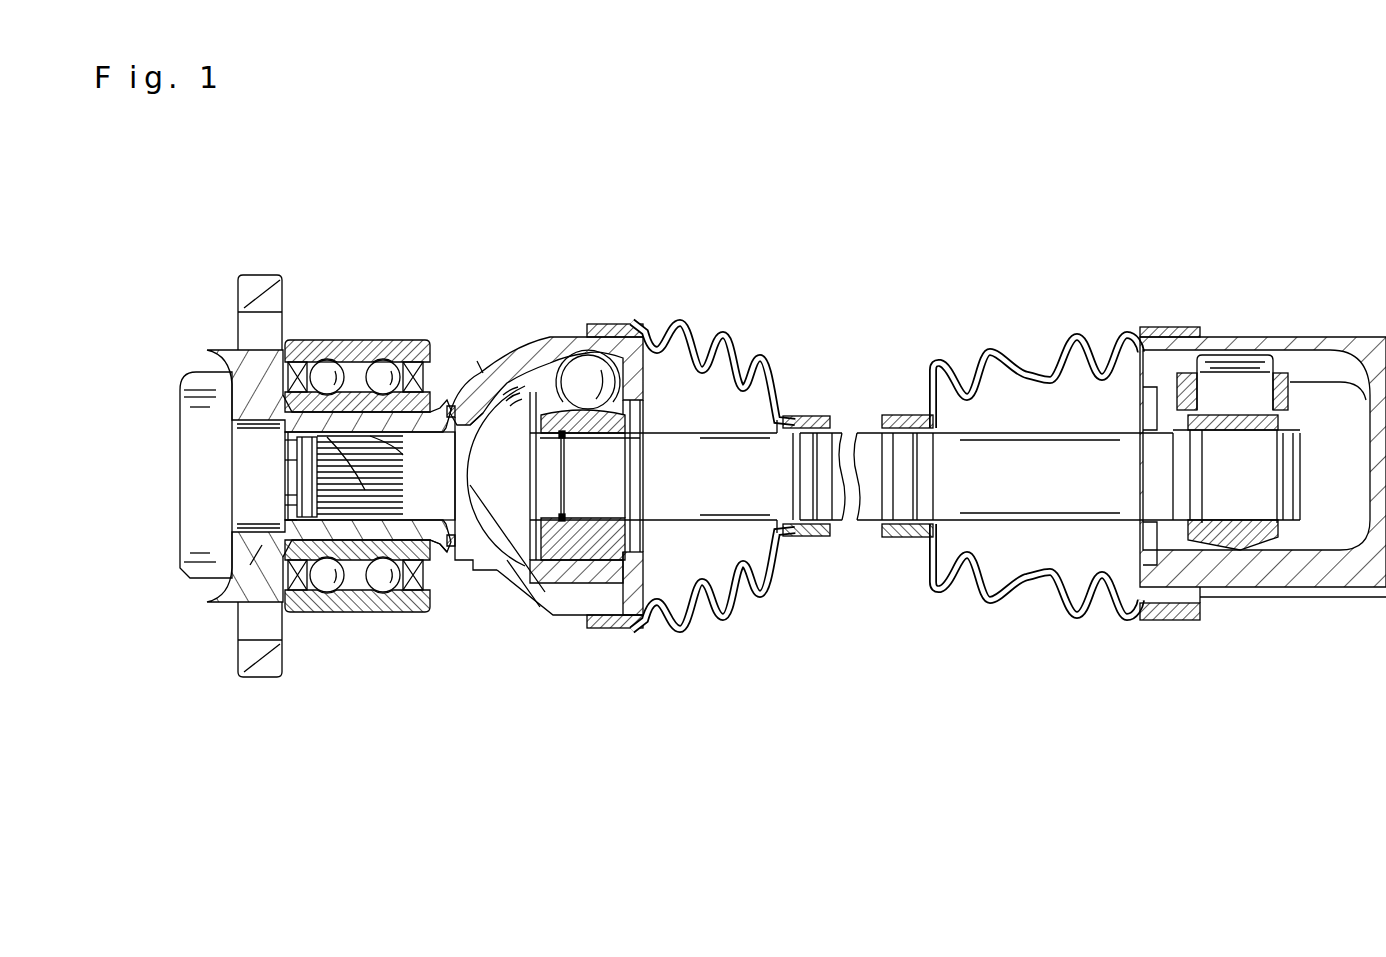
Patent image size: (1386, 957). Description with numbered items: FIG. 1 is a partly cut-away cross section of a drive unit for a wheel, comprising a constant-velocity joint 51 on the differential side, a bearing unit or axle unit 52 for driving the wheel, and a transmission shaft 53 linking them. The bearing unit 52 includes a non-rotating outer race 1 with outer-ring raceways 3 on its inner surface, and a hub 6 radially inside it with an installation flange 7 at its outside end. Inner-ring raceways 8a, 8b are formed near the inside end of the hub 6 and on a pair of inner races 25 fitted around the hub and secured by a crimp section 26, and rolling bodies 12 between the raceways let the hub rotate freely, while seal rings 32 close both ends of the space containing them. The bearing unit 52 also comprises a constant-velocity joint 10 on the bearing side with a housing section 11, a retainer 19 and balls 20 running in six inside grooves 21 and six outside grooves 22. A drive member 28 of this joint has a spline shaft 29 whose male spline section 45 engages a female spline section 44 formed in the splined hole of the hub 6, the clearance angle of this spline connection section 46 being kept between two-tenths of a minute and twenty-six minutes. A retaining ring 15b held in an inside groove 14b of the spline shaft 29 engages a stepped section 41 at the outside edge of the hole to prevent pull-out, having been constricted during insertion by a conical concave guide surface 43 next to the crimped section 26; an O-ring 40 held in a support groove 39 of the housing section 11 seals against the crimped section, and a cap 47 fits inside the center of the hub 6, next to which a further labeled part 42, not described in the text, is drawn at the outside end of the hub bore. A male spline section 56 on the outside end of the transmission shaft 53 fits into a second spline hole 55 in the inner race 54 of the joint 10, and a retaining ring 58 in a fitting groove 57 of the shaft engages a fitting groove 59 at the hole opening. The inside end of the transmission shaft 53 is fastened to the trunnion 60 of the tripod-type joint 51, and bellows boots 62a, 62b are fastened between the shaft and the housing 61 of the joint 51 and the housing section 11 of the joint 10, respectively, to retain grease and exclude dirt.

The outer race 1 is at (380, 336).
The outer-ring raceways 3 is at (322, 588).
The hub 6 is at (185, 300).
The installation flange 7 is at (262, 290).
The first inner-ring raceway 8a is at (318, 364).
The inner-ring raceway 8b is at (398, 364).
The constant-velocity joint on the bearing side 10 is at (570, 622).
The housing section 11 is at (480, 372).
The rolling bodies 12 is at (327, 360).
The inside groove 14b is at (320, 500).
The retaining ring 15b is at (300, 495).
The retainer 19 is at (642, 376).
The balls 20 is at (560, 368).
The inside grooves 21 is at (605, 338).
The outside grooves 22 is at (580, 345).
The inner race 25 is at (235, 370).
The crimp section 26 is at (446, 574).
The drive member 28 is at (545, 610).
The spline shaft 29 is at (255, 575).
The seal rings 32 is at (299, 592).
The support groove 39 is at (481, 366).
The O-ring 40 is at (480, 582).
The stepped section 41 is at (290, 520).
The hub bore 42 is at (290, 440).
The conical concave guide surface 43 is at (449, 404).
The female spline section 44 is at (380, 470).
The male spline section 45 is at (400, 440).
The spline connection section 46 is at (400, 505).
The cap 47 is at (290, 460).
The constant-velocity joint on the differential side 51 is at (1248, 343).
The bearing unit for driving a wheel 52 is at (588, 243).
The transmission shaft 53 is at (755, 440).
The inner race 54 is at (640, 420).
The second spline hole 55 is at (620, 506).
The male spline section 56 is at (640, 456).
The fitting groove 57 is at (545, 445).
The retaining ring 58 is at (540, 506).
The fitting groove 59 is at (585, 455).
The trunnion 60 is at (1235, 555).
The housing 61 is at (1310, 590).
The boot 62a is at (1100, 585).
The boot 62b is at (700, 624).